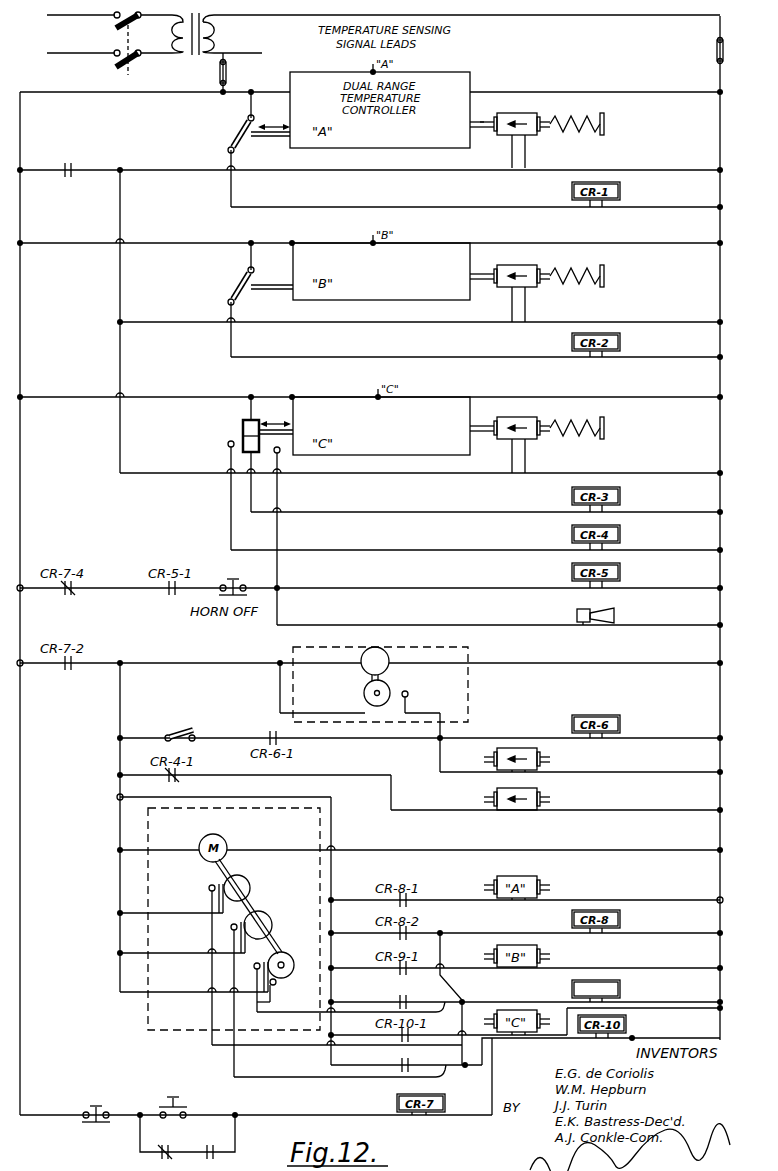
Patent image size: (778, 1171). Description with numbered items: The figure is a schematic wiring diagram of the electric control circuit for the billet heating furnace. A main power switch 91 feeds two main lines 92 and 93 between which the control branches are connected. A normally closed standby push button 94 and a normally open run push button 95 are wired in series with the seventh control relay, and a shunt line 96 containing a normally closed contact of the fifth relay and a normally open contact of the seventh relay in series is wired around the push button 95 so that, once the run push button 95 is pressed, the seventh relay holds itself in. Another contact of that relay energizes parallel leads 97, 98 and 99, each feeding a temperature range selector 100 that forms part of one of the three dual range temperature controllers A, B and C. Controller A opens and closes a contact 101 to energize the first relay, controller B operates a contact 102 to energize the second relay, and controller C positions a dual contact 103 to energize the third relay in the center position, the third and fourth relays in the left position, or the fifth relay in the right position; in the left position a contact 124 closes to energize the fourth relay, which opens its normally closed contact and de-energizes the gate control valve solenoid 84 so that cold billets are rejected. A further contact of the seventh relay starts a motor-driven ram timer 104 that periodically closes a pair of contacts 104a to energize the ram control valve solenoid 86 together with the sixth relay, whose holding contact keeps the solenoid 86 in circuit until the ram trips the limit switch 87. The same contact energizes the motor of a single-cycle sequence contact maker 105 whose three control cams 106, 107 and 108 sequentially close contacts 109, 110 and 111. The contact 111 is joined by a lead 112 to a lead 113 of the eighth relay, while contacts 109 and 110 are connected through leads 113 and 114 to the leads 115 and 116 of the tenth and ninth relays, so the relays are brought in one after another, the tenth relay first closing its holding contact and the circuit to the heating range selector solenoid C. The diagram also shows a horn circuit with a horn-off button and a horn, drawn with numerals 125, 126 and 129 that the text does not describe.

The gate control valve solenoid 84 is at (556, 803).
The ram control valve solenoid 86 is at (555, 759).
The limit switch 87 is at (195, 736).
The main power switch 91 is at (110, 58).
The main line 92 is at (22, 126).
The main line 93 is at (722, 162).
The push button 94 is at (80, 1108).
The push button 95 is at (195, 1106).
The shunt line 96 is at (238, 1146).
The lead 97 is at (148, 170).
The lead 98 is at (156, 324).
The lead 99 is at (178, 472).
The temperature range selector 100 is at (535, 138).
The contact 101 is at (243, 148).
The contact 102 is at (245, 306).
The dual contact 103 is at (238, 431).
The ram timer 104 is at (470, 660).
The pair of contacts 104a is at (410, 694).
The single-cycle sequence contact maker 105 is at (331, 842).
The control cam 106 is at (250, 884).
The control cam 107 is at (262, 913).
The control cam 108 is at (284, 953).
The contact 109 is at (208, 889).
The contact 110 is at (230, 928).
The contact 111 is at (252, 969).
The lead 112 is at (274, 1013).
The lead 113 is at (271, 1081).
The lead 114 is at (230, 1048).
The lead 115 is at (480, 1078).
The lead 116 is at (488, 1007).
The contact 124 is at (227, 443).
The switch contact 125 is at (280, 454).
The horn 126 is at (600, 616).
The horn off push button 129 is at (228, 580).